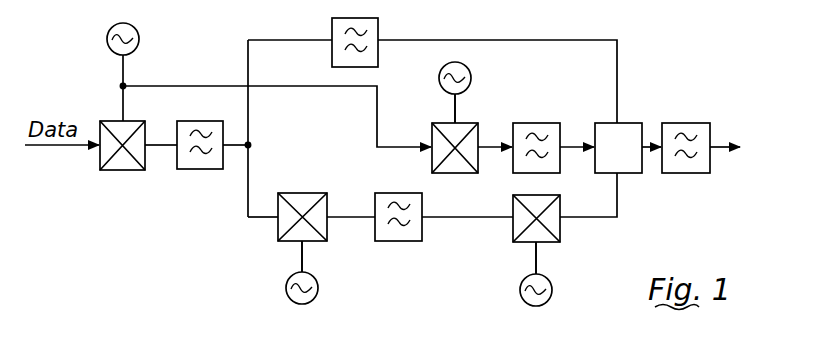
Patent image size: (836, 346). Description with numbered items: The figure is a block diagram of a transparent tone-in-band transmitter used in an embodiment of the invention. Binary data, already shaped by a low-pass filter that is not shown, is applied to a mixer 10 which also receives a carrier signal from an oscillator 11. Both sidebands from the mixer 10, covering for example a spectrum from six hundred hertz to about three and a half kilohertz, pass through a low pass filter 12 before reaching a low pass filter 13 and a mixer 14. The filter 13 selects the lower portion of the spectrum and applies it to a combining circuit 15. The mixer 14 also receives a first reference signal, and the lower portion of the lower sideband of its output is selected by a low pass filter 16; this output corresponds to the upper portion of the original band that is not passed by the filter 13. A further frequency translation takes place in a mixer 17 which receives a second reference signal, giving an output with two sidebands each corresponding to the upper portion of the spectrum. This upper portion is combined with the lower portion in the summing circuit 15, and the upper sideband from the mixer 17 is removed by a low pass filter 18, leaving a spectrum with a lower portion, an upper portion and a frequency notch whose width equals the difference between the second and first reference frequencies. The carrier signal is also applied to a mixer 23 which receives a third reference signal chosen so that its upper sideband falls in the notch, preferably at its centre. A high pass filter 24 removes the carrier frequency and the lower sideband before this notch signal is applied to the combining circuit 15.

The mixer 10 is at (115, 171).
The oscillator 11 is at (107, 34).
The low pass filter 12 is at (200, 170).
The low pass filter 13 is at (378, 52).
The mixer 14 is at (303, 192).
The combining circuit 15 is at (612, 122).
The low pass filter 16 is at (403, 242).
The mixer 17 is at (560, 230).
The low pass filter 18 is at (683, 123).
The mixer 23 is at (431, 138).
The high pass filter 24 is at (536, 123).